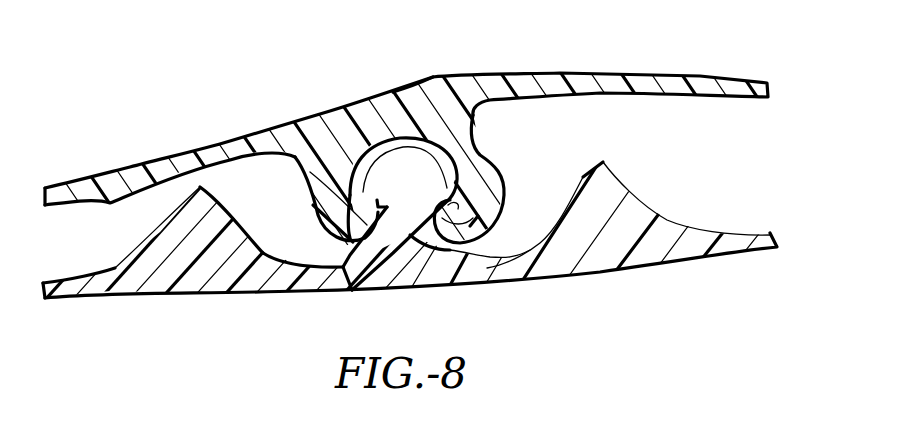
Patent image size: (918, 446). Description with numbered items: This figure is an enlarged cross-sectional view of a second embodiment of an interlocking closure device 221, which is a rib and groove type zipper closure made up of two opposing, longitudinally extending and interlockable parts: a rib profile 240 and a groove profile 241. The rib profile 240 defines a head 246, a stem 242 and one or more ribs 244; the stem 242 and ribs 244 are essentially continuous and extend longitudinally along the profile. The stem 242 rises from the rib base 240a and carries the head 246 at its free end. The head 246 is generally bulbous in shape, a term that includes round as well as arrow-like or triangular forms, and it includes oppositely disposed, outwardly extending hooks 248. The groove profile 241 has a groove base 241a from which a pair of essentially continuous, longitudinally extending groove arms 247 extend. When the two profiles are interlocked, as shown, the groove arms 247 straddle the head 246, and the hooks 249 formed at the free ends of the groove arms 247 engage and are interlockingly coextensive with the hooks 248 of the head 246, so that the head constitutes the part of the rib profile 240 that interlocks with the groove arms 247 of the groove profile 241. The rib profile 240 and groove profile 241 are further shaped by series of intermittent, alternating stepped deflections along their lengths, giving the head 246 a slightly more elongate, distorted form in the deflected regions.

The interlocking closure device 221 is at (149, 118).
The rib profile 240 is at (746, 232).
The rib base 240a is at (413, 243).
The groove profile 241 is at (687, 97).
The groove base 241a is at (401, 93).
The stem 242 is at (400, 222).
The ribs 244 is at (190, 230).
The head 246 is at (427, 168).
The groove arms 247 is at (320, 173).
The hooks 248 is at (460, 198).
The hooks 249 is at (318, 213).